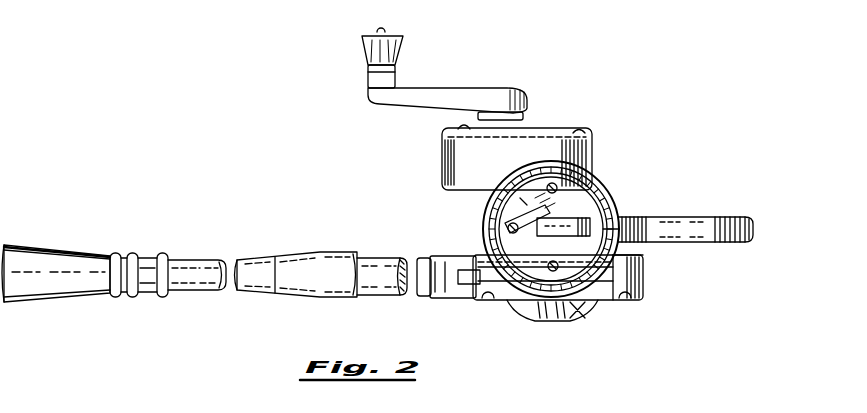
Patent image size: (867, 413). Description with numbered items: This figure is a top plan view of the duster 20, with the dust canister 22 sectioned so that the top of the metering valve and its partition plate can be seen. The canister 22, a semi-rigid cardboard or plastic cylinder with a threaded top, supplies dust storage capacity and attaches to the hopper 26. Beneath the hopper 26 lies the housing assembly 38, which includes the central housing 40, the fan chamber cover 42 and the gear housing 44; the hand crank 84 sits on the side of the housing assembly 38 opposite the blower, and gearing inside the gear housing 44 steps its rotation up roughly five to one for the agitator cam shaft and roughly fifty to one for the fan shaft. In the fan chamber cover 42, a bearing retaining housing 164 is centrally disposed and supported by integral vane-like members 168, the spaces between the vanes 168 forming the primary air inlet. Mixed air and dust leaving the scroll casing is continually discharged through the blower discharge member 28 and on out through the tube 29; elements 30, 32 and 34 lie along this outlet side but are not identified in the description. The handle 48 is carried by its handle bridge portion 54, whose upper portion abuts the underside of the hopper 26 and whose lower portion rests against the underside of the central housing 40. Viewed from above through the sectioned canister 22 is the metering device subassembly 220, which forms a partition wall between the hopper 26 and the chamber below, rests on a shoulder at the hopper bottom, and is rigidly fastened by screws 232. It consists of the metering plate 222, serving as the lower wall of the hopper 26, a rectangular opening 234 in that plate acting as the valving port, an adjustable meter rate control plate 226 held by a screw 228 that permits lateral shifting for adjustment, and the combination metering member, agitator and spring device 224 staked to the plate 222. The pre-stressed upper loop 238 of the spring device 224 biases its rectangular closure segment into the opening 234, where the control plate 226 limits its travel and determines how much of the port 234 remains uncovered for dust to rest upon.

The duster 20 is at (420, 203).
The dust canister 22 is at (597, 195).
The hopper 26 is at (592, 187).
The blower discharge member 28 is at (452, 290).
The tube 29 is at (293, 249).
The tube end 30 is at (388, 285).
The hose 32 is at (200, 267).
The nozzle 34 is at (62, 260).
The housing assembly 38 is at (624, 195).
The central housing 40 is at (622, 250).
The fan chamber cover 42 is at (503, 292).
The gear housing 44 is at (551, 143).
The handle 48 is at (698, 213).
The handle bridge portion 54 is at (733, 217).
The hand crank 84 is at (448, 98).
The bearing retaining housing 164 is at (553, 312).
The vane-like members 168 is at (577, 308).
The metering device subassembly 220 is at (514, 205).
The metering plate 222 is at (525, 198).
The combination metering member, agitator and spring device 224 is at (622, 213).
The adjustable meter rate control plate 226 is at (508, 229).
The screw 228 is at (513, 230).
The screws 232 is at (640, 270).
The rectangular opening 234 is at (535, 232).
The upper loop 238 is at (573, 236).